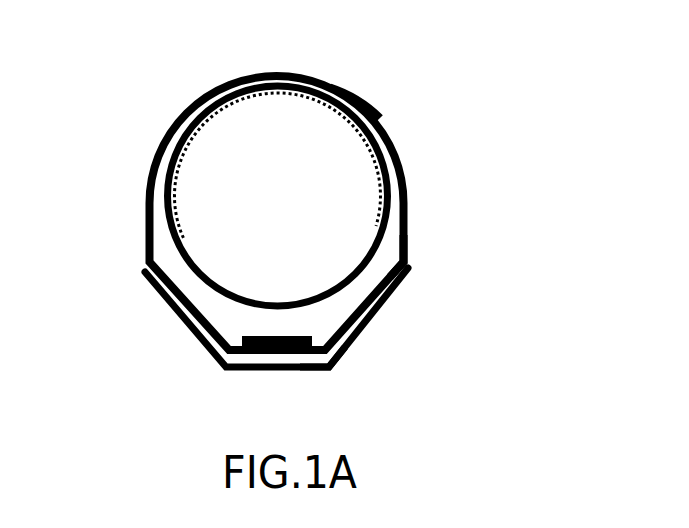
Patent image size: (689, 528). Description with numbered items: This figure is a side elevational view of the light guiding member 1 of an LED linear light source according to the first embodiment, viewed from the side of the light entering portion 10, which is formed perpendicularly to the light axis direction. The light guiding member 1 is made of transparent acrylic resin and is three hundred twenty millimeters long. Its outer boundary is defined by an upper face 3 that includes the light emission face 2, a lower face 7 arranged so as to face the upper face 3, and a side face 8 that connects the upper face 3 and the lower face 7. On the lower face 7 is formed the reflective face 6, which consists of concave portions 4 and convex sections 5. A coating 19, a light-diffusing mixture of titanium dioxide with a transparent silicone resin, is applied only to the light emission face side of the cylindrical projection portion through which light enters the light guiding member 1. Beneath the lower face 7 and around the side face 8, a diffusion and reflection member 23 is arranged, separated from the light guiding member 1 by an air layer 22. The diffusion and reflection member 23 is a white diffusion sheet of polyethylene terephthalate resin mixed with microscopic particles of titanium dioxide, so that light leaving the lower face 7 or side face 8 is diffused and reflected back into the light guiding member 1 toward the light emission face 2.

The light entering portion 10 is at (304, 205).
The light guiding member 1 is at (255, 192).
The light emission face 2 is at (278, 153).
The coating 19 is at (266, 123).
The upper face 3 is at (390, 85).
The air layer 22 is at (462, 248).
The side face 8 is at (253, 317).
The reflective face 6 is at (345, 316).
The concave portions 4 is at (364, 346).
The convex sections 5 is at (400, 346).
The lower face 7 is at (228, 378).
The diffusion and reflection member 23 is at (359, 376).